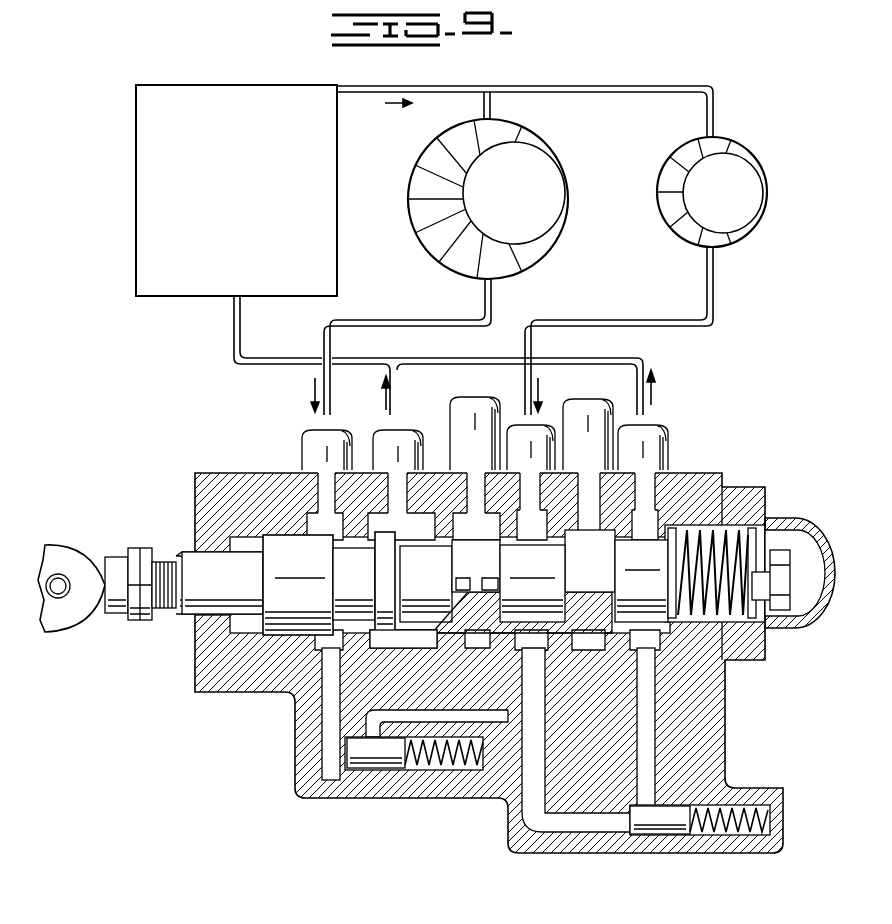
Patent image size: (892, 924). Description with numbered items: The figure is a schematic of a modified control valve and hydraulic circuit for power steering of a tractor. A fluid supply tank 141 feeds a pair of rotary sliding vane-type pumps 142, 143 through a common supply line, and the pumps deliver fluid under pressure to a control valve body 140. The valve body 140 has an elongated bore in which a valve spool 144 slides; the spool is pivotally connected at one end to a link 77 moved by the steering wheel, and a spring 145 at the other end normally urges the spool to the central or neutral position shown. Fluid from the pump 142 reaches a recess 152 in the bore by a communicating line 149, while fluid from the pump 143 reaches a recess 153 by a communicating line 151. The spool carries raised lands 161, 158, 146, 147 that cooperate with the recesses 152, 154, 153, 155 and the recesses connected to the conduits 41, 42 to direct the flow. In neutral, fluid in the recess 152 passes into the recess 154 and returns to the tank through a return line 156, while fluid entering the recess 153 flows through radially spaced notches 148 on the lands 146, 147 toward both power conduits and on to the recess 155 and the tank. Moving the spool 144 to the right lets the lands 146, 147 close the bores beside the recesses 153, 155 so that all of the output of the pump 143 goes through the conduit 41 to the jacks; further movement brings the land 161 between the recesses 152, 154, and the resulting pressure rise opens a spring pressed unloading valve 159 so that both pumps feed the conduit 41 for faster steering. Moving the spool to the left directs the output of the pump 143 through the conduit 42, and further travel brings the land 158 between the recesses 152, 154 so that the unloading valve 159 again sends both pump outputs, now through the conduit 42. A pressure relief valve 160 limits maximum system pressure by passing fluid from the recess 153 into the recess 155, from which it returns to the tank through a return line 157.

The fluid supply tank 141 is at (262, 137).
The rotary sliding vane-type pump 142 is at (552, 183).
The rotary sliding vane-type pump 143 is at (745, 172).
The communicating line 149 is at (432, 325).
The communicating line 151 is at (686, 326).
The return line 156 is at (434, 414).
The conduit 42 is at (500, 405).
The conduit 41 is at (575, 410).
The return line 157 is at (660, 445).
The link 77 is at (68, 552).
The valve spool 144 is at (185, 565).
The raised land 161 is at (312, 564).
The recess 152 is at (333, 540).
The raised land 158 is at (388, 540).
The radially spaced notches 148 is at (462, 584).
The raised land 146 is at (490, 562).
The raised land 147 is at (603, 549).
The recess 153 is at (526, 626).
The recess 155 is at (650, 528).
The spring 145 is at (745, 548).
The recess 154 is at (427, 648).
The control valve body 140 is at (215, 673).
The spring pressed unloading valve 159 is at (355, 770).
The pressure relief valve 160 is at (668, 822).